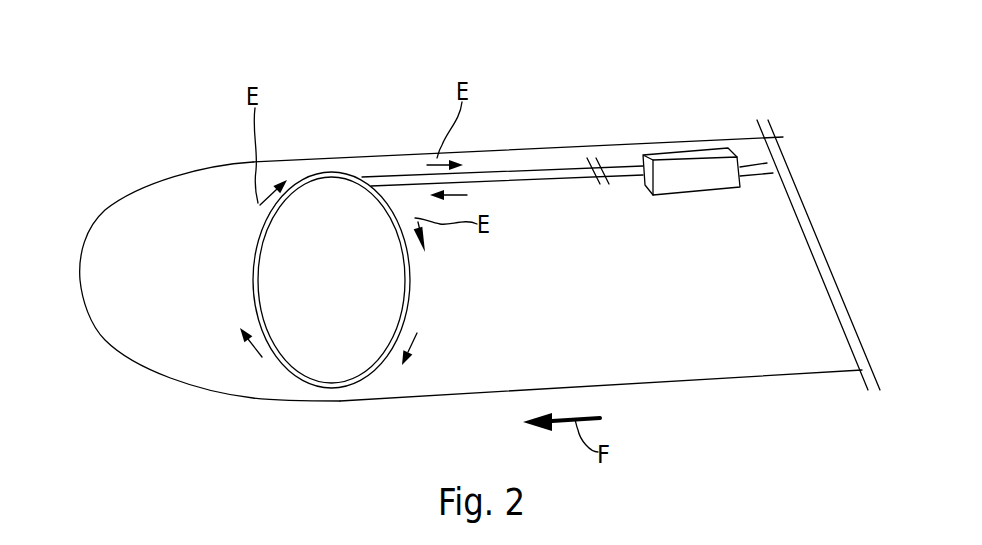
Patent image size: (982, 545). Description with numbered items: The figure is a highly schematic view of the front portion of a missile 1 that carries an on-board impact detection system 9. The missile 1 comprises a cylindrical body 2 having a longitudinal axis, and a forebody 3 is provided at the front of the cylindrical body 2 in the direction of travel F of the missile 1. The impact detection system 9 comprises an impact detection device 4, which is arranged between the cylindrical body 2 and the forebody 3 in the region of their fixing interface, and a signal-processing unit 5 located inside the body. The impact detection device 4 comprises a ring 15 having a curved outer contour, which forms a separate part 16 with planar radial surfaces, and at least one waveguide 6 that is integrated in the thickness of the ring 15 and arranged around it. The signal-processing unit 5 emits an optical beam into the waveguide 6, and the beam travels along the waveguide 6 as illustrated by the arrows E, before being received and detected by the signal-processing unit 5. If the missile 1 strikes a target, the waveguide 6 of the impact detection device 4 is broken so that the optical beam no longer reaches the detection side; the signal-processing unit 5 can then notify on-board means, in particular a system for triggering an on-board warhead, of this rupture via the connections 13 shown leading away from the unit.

The missile 1 is at (172, 421).
The cylindrical body 2 is at (715, 380).
The forebody 3 is at (90, 193).
The impact detection device 4 is at (354, 155).
The signal-processing unit 5 is at (688, 153).
The waveguide 6 is at (375, 376).
The impact detection system 9 is at (559, 103).
The connections 13 is at (753, 163).
The ring 15 is at (344, 406).
The separate part 16 is at (314, 154).